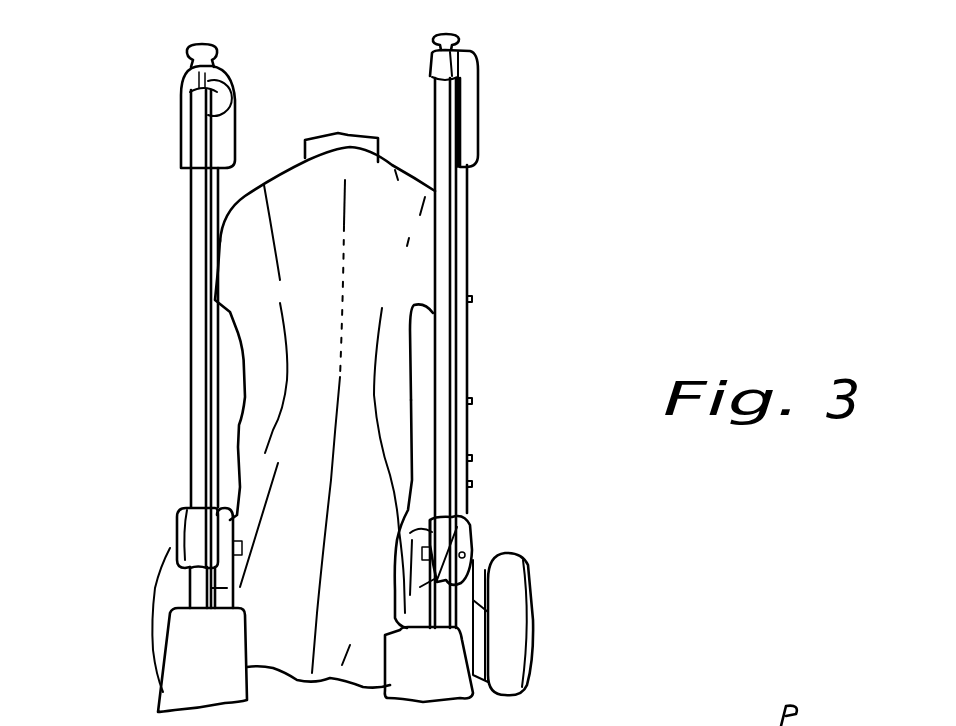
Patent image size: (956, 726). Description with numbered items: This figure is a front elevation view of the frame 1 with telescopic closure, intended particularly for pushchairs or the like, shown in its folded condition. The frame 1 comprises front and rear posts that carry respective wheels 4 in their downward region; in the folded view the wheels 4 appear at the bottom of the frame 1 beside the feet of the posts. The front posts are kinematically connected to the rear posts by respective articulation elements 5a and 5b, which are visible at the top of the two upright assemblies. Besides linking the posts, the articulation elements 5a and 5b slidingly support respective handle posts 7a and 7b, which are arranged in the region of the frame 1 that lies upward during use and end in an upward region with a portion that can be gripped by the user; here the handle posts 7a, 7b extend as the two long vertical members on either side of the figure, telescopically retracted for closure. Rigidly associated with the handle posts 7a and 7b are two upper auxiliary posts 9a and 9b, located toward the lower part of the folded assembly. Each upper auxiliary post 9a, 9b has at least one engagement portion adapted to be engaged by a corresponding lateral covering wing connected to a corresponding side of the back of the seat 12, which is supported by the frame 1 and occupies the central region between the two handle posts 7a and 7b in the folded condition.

The frame 1 is at (567, 247).
The wheels 4 is at (182, 600).
The articulation element 5a is at (470, 45).
The articulation element 5b is at (168, 61).
The handle post 7a is at (448, 345).
The handle post 7b is at (197, 325).
The upper auxiliary post 9a is at (445, 573).
The upper auxiliary post 9b is at (225, 592).
The seat 12 is at (282, 152).